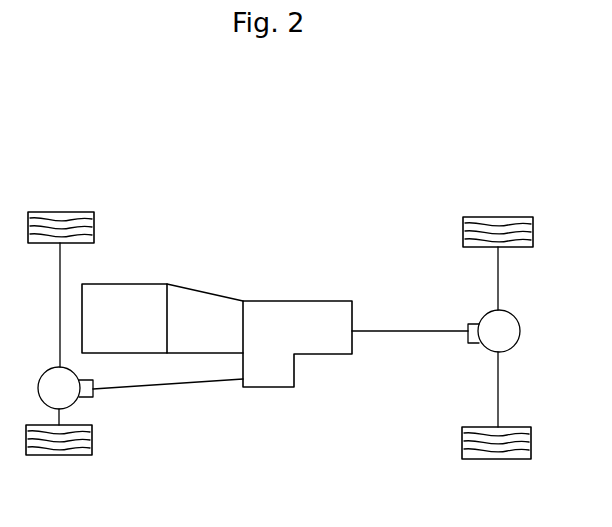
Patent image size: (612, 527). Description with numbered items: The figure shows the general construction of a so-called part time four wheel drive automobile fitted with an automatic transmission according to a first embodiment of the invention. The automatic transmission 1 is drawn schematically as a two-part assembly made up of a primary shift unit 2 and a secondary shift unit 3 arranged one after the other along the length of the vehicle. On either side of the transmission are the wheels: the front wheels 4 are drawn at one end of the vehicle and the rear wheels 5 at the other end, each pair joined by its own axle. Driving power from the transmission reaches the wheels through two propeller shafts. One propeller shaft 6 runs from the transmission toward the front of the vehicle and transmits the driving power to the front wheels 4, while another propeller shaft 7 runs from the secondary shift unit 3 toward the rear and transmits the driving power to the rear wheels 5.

The automatic transmission 1 is at (238, 291).
The primary shift unit 2 is at (150, 283).
The secondary shift unit 3 is at (327, 301).
The front wheels 4 is at (71, 212).
The rear wheels 5 is at (508, 217).
The propeller shaft 6 is at (182, 386).
The propeller shaft 7 is at (389, 333).